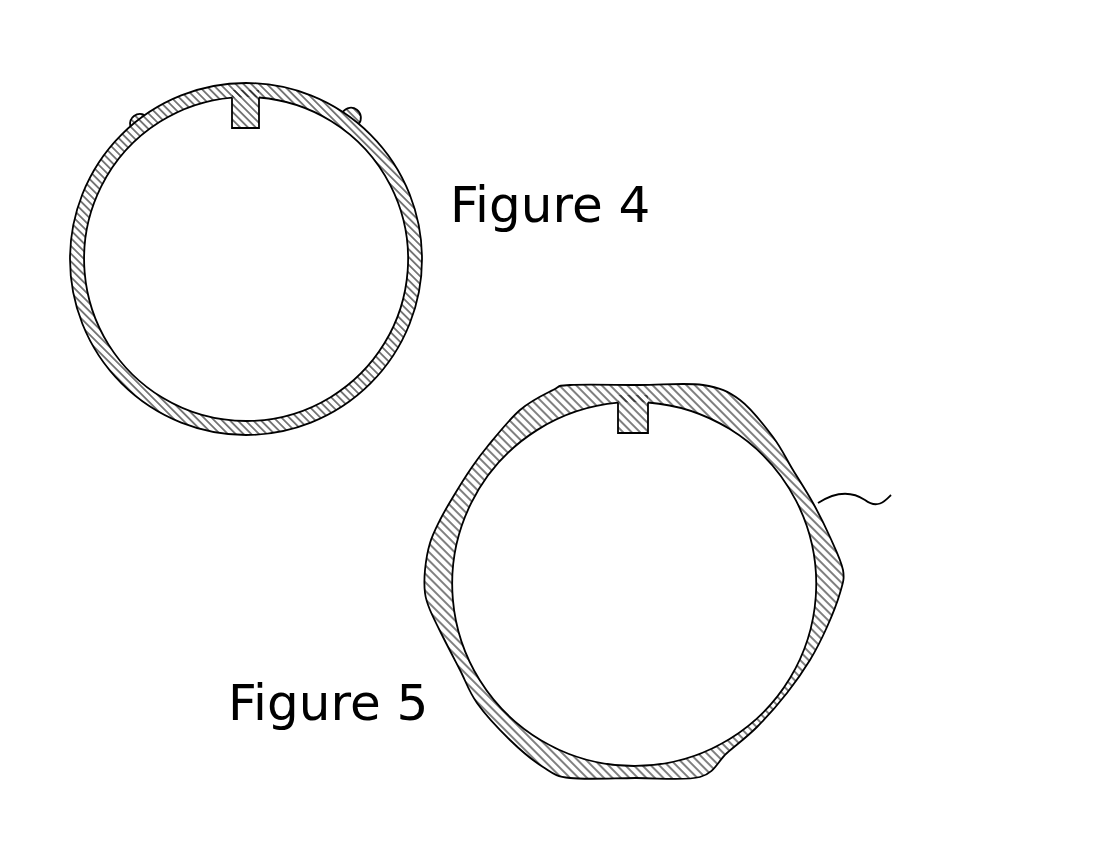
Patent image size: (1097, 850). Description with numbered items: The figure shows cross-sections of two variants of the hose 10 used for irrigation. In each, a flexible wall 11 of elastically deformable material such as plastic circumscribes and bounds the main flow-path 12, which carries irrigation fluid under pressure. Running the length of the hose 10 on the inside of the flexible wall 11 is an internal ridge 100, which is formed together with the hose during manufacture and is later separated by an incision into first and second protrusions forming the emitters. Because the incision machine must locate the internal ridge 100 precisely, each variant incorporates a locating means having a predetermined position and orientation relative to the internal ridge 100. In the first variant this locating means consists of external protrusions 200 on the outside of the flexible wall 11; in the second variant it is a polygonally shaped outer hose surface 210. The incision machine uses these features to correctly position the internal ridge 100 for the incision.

In FIG. 5, the hose 10 is at (678, 566).
In FIG. 4, the flexible wall 11 is at (85, 190).
In FIG. 5, the flexible wall 11 is at (485, 447).
In FIG. 4, the main flow-path 12 is at (213, 283).
In FIG. 5, the main flow-path 12 is at (597, 612).
In FIG. 4, the internal ridge 100 is at (243, 130).
In FIG. 5, the internal ridge 100 is at (633, 435).
In FIG. 4, the external protrusions 200 is at (140, 108).
In FIG. 5, the polygonally shaped outer hose surface 210 is at (827, 667).